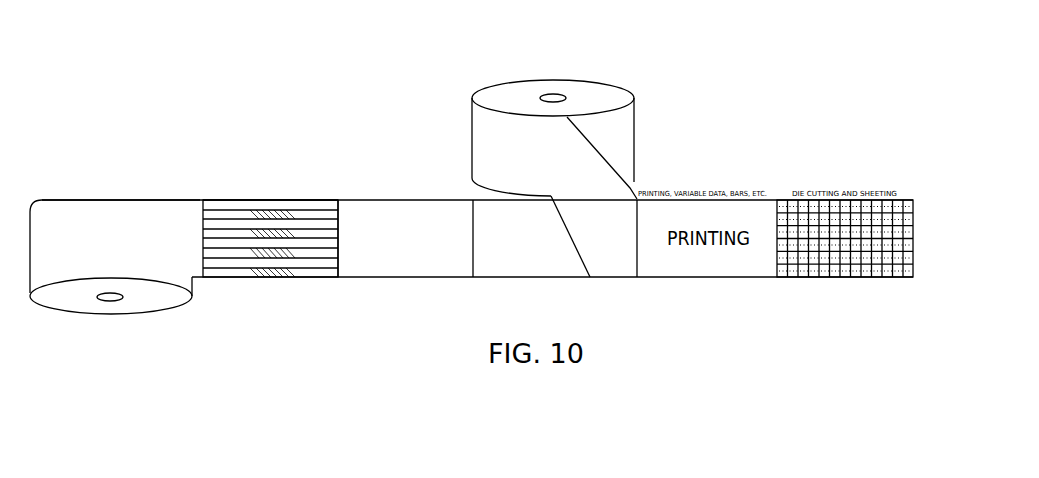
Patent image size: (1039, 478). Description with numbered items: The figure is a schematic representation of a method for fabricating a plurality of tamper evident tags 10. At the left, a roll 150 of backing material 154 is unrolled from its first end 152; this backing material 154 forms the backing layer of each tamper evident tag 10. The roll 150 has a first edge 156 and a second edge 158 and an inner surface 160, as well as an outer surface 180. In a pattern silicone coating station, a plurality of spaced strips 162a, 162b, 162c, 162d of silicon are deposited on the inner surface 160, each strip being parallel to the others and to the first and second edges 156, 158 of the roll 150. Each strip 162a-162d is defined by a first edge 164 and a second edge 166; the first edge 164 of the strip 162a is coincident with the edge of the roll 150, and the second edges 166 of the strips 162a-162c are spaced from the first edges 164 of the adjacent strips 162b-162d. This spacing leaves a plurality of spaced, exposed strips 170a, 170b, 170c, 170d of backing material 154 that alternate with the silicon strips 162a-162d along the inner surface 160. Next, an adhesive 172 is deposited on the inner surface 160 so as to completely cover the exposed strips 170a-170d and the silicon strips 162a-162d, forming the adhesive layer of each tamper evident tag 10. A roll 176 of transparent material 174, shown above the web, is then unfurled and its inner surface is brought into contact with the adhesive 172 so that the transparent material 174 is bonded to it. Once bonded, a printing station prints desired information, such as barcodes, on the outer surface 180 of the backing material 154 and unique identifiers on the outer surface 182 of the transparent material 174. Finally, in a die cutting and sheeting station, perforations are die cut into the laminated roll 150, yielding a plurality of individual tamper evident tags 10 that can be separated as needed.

The tamper evident tag 10 is at (785, 202).
The roll 150 is at (125, 330).
The first end 152 is at (921, 253).
The backing material 154 is at (90, 199).
The first edge 156 is at (180, 200).
The second edge 158 is at (196, 279).
The inner surface 160 is at (175, 293).
The strip of silicon 162a is at (330, 205).
The strip of silicon 162b is at (327, 223).
The strip of silicon 162c is at (325, 245).
The strip of silicon 162d is at (320, 262).
The first edge 164 is at (206, 205).
The second edge 166 is at (343, 211).
The exposed strip 170a is at (203, 213).
The exposed strip 170b is at (203, 233).
The exposed strip 170c is at (310, 255).
The exposed strip 170d is at (292, 268).
The adhesive 172 is at (411, 247).
The transparent material 174 is at (603, 150).
The roll of transparent material 176 is at (641, 126).
The outer surface of backing material 180 is at (76, 254).
The outer surface of transparent material 182 is at (516, 247).